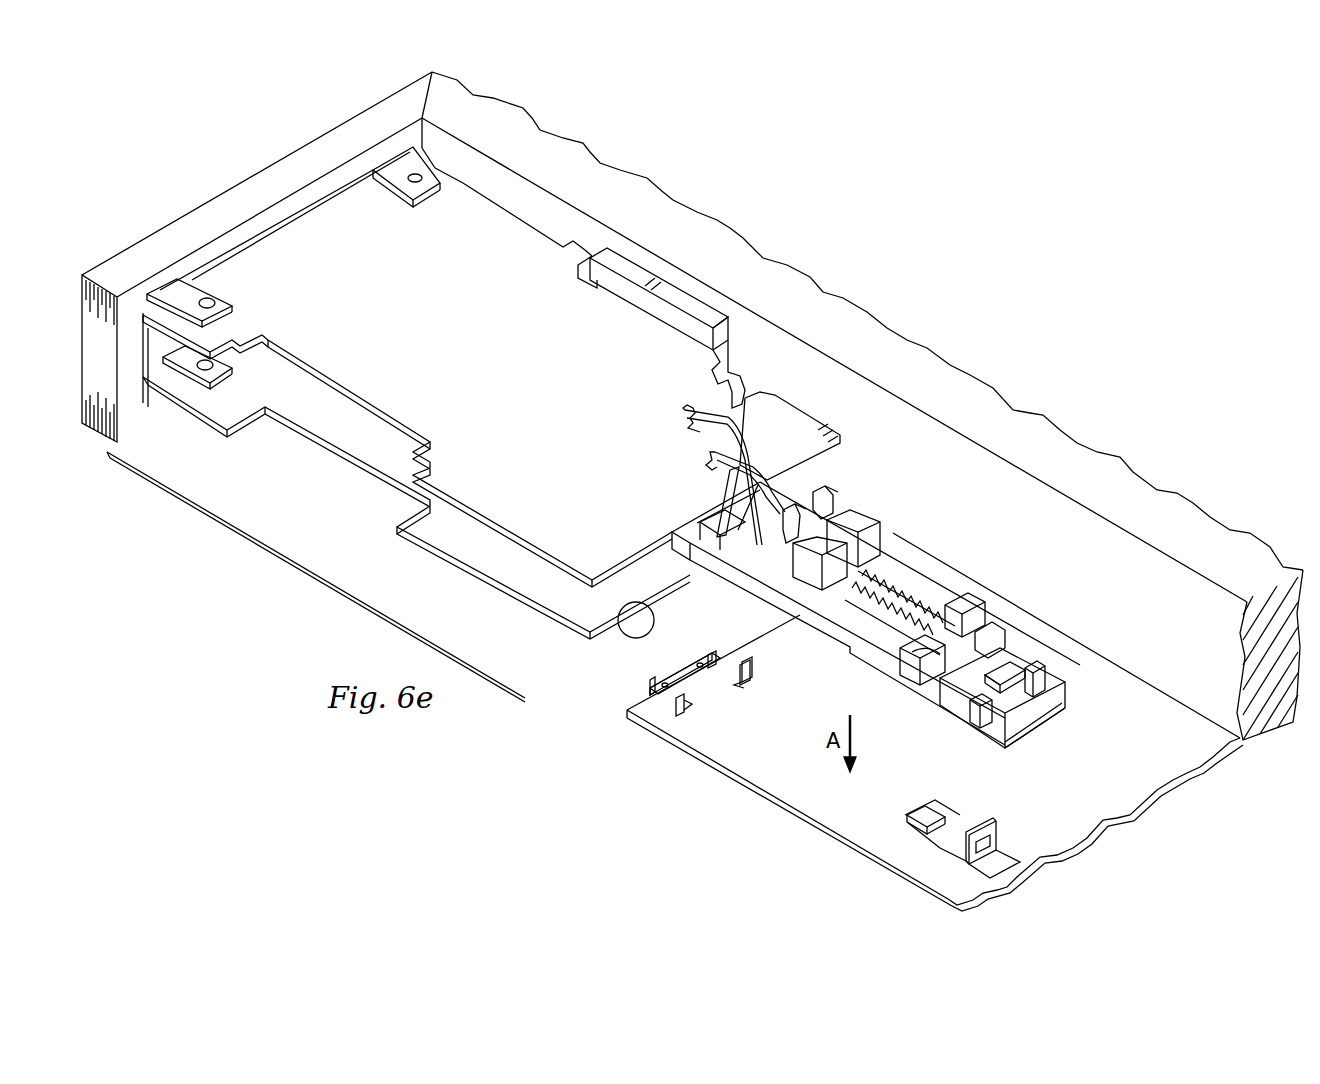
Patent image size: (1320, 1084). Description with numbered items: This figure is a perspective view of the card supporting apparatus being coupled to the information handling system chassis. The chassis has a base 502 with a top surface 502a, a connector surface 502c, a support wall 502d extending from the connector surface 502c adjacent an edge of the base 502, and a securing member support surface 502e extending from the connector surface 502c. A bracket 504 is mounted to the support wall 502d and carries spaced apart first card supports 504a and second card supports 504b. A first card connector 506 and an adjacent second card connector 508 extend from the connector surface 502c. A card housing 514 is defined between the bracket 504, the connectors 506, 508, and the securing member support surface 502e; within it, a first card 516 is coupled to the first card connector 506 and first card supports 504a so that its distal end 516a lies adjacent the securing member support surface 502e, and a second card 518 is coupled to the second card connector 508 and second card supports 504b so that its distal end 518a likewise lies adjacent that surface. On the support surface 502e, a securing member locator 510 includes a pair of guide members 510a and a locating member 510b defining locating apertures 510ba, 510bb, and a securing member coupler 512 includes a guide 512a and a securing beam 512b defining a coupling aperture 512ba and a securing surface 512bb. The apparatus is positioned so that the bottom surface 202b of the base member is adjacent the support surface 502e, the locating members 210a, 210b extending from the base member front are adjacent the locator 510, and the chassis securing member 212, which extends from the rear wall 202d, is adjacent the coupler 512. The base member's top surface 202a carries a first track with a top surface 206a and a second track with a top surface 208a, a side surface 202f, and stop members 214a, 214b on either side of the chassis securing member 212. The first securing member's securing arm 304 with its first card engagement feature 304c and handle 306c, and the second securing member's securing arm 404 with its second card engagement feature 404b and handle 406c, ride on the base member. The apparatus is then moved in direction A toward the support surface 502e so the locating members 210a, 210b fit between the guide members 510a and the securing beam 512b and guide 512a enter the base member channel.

The base 502 is at (309, 140).
The top surface 502a is at (895, 337).
The connector surface 502c is at (1022, 481).
The support wall 502d is at (166, 232).
The securing member support surface 502e is at (1200, 718).
The bracket 504 is at (265, 218).
The first card supports 504a is at (427, 198).
The second card supports 504b is at (228, 372).
The first card connector 506 is at (740, 323).
The second card connector 508 is at (739, 395).
The first card 516 is at (505, 350).
The distal end 516a is at (840, 437).
The second card 518 is at (338, 458).
The distal end 518a is at (628, 614).
The card housing 514 is at (306, 583).
The securing arm 304 is at (690, 407).
The first card engagement feature 304c is at (668, 418).
The securing arm 404 is at (750, 480).
The second card engagement feature 404b is at (694, 458).
The locating member 210a is at (690, 556).
The locating member 210b is at (715, 509).
The handle 406c is at (843, 495).
The handle 306c is at (790, 561).
The top surface 208a is at (960, 594).
The top surface 202a is at (990, 638).
The stop member 214b is at (1035, 667).
The chassis securing member 212 is at (1010, 673).
The top surface 206a is at (910, 663).
The stop member 214a is at (978, 710).
The side surface 202f is at (1067, 699).
The rear wall 202d is at (1044, 723).
The bottom surface 202b is at (1028, 738).
The securing member locator 510 is at (620, 704).
The guide members 510a is at (678, 712).
The locating member 510b is at (697, 690).
The locating aperture 510ba is at (658, 680).
The locating aperture 510bb is at (713, 652).
The securing member coupler 512 is at (896, 816).
The guide 512a is at (920, 810).
The securing beam 512b is at (983, 822).
The coupling aperture 512ba is at (1000, 836).
The securing surface 512bb is at (953, 849).